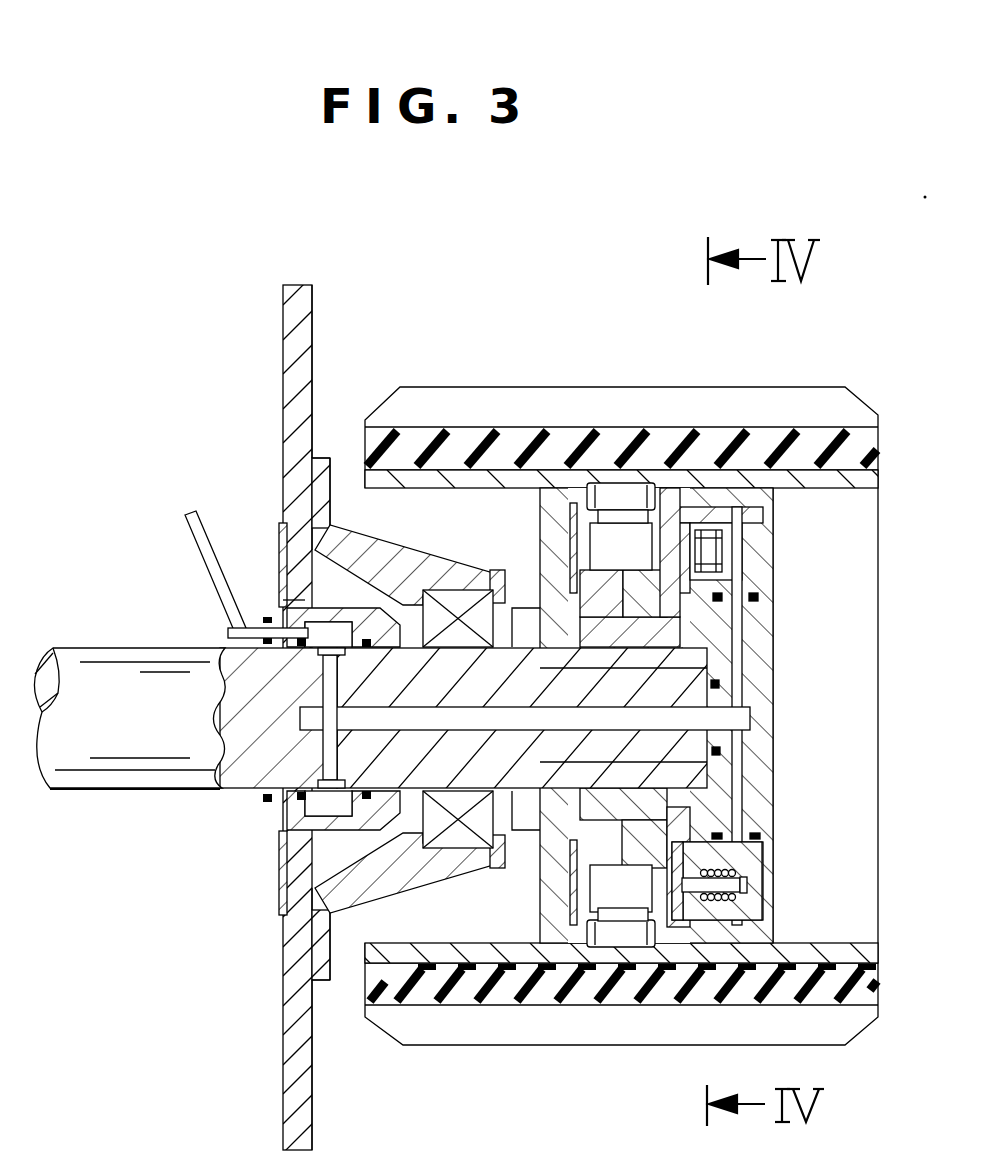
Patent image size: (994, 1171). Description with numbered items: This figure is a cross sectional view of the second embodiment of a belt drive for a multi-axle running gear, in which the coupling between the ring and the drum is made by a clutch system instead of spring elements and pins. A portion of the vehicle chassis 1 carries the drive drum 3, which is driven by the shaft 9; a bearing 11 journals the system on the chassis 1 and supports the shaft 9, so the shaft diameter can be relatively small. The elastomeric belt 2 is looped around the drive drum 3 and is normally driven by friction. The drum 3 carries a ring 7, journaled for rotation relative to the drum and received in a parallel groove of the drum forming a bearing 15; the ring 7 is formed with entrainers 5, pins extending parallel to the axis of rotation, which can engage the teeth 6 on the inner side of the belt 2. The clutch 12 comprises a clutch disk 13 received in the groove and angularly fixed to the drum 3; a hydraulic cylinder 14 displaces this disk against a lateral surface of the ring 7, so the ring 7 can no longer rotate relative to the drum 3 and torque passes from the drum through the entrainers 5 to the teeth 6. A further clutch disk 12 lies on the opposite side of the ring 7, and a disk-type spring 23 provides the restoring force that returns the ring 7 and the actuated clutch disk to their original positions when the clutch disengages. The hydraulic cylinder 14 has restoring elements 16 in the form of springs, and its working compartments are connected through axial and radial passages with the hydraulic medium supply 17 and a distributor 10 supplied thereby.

The vehicle chassis 1 is at (285, 356).
The belt 2 is at (818, 440).
The drive drum 3 is at (850, 486).
The entrainers 5 is at (634, 494).
The teeth 6 is at (600, 480).
The ring 7 is at (596, 604).
The shaft 9 is at (135, 665).
The distributor 10 is at (300, 608).
The bearing 11 is at (458, 596).
The clutch 12 is at (548, 556).
The clutch disk 13 is at (700, 472).
The hydraulic cylinder 14 is at (720, 548).
The bearing 15 is at (690, 628).
The restoring elements 16 is at (740, 895).
The hydraulic medium supply 17 is at (205, 540).
The disk-type spring 23 is at (540, 850).